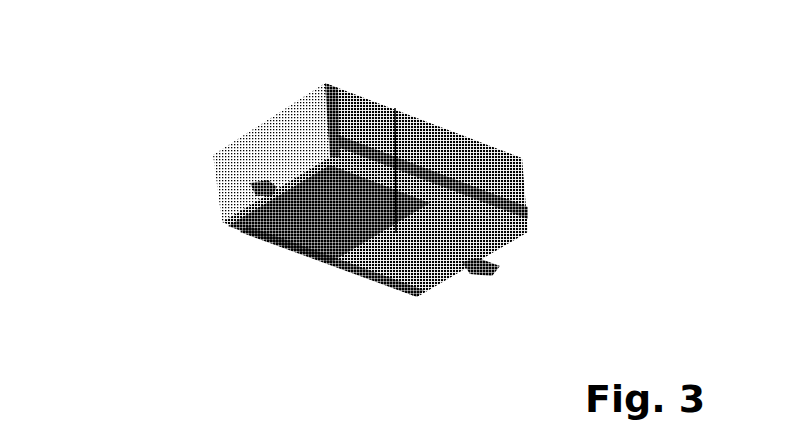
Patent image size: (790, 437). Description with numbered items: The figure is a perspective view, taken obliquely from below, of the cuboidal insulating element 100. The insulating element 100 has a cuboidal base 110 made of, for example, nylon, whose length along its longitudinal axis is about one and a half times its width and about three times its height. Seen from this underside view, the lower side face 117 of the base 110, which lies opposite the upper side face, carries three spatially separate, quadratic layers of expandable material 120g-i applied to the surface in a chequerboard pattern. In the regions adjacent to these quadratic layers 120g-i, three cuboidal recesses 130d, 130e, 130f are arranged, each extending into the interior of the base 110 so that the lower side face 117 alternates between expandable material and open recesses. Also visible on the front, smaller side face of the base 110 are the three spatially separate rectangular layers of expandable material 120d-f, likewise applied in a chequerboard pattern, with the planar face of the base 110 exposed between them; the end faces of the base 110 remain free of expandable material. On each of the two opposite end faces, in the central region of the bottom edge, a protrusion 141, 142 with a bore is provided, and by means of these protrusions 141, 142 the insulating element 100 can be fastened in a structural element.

The insulating element 100 is at (337, 220).
The base 110 is at (258, 137).
The lower side face 117 is at (430, 272).
The rectangular layers of expandable material 120d-f is at (363, 120).
The quadratic layers of expandable material 120g-i is at (390, 212).
The cuboidal recess 130d is at (492, 228).
The cuboidal recess 130e is at (348, 246).
The cuboidal recess 130f is at (328, 156).
The protrusion 141 is at (268, 183).
The protrusion 142 is at (500, 266).